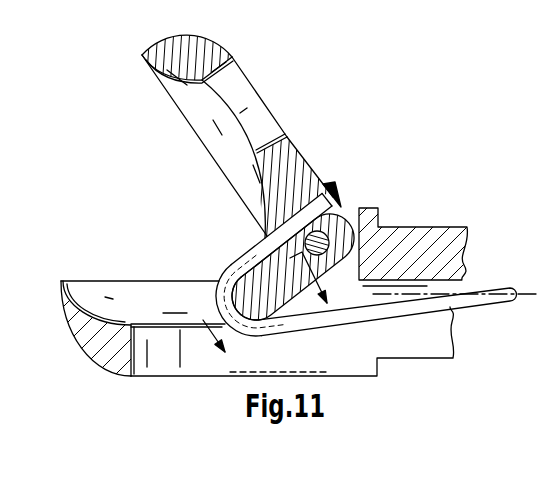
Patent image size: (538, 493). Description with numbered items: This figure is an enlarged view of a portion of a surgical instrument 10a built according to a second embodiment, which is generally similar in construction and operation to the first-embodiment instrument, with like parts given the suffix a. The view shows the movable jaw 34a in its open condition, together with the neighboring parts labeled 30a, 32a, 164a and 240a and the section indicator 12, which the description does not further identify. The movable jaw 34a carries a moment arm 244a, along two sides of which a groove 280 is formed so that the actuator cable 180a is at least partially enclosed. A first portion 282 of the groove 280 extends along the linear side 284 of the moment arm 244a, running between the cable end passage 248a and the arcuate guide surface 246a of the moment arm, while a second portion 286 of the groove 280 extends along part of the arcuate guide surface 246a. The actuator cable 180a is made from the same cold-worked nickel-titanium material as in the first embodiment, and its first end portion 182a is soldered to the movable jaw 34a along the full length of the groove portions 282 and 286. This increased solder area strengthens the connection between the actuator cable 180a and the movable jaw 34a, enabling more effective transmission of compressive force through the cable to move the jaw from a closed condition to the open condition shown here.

The surgical instrument 10a is at (117, 203).
The section view indicator 12 is at (275, 312).
The frame member 30a is at (440, 210).
The frame member 32a is at (72, 342).
The movable jaw 34a is at (137, 95).
The pivot pin 164a is at (291, 258).
The actuator cable 180a is at (485, 303).
The first end portion 182a is at (343, 318).
The arm section 240a is at (268, 108).
The moment arm 244a is at (300, 328).
The arcuate guide surface 246a is at (247, 323).
The cable end passage 248a is at (328, 192).
The groove 280 is at (230, 273).
The first portion of the groove 282 is at (253, 246).
The linear side 284 is at (262, 237).
The second portion of the groove 286 is at (212, 312).